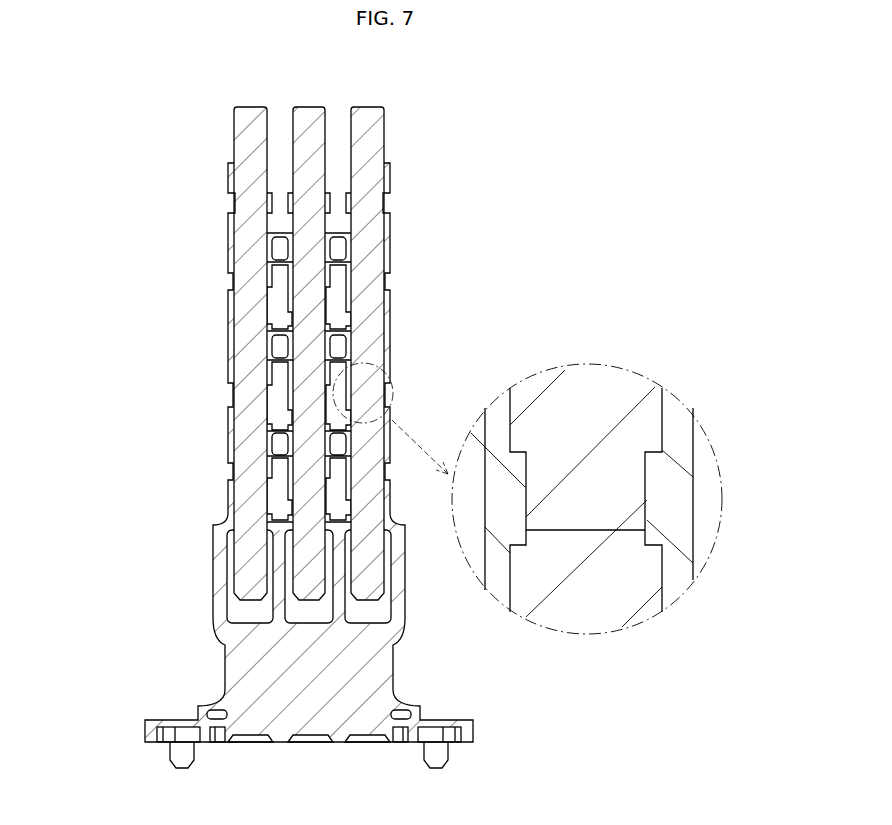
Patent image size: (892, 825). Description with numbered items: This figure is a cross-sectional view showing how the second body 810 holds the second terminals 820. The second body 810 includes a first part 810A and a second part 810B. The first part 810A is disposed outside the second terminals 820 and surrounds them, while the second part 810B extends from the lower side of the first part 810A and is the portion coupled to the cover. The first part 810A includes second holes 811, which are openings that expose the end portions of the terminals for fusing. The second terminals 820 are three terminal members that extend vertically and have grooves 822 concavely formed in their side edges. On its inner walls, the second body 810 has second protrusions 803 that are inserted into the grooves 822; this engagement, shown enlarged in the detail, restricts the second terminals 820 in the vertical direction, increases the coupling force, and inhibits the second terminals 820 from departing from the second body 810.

The second body 810 is at (415, 251).
The first part 810A is at (233, 205).
The second part 810B is at (147, 729).
The second holes 811 is at (363, 617).
The second terminals 820 is at (362, 113).
The grooves 822 is at (643, 468).
The second protrusions 803 is at (733, 532).